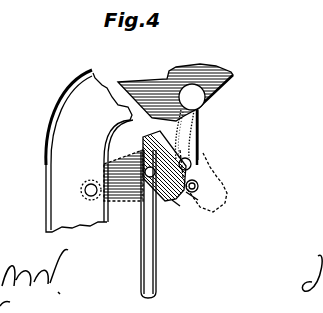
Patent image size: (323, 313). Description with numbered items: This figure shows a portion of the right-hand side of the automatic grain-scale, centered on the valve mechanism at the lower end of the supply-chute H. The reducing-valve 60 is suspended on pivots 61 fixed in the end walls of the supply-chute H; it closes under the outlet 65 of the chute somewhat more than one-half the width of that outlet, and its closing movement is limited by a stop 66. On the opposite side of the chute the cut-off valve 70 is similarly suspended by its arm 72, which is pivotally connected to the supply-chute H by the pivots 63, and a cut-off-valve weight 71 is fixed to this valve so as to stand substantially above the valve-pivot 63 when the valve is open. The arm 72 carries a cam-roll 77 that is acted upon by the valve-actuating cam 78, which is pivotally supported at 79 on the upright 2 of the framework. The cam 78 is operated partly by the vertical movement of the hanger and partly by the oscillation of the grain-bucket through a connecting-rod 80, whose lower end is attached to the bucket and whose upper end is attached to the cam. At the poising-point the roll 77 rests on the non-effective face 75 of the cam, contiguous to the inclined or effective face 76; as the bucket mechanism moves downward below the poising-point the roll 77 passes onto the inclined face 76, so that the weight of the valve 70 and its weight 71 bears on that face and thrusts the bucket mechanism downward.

The upright 2 is at (56, 162).
The supply-chute H is at (205, 74).
The cut-off-valve weight 71 is at (188, 99).
The inclined or effective face 76 is at (190, 137).
The pivots 61 is at (192, 150).
The pivots 63 is at (187, 160).
The reducing-valve 60 is at (140, 198).
The valve-actuating cam 78 is at (178, 190).
The connecting-rod 80 is at (148, 256).
The pivot 79 is at (90, 190).
The arm 72 is at (190, 165).
The non-effective face 75 is at (196, 183).
The cut-off valve 70 is at (222, 203).
The cam-roll 77 is at (194, 193).
The outlet 65 is at (152, 128).
The stop 66 is at (107, 157).